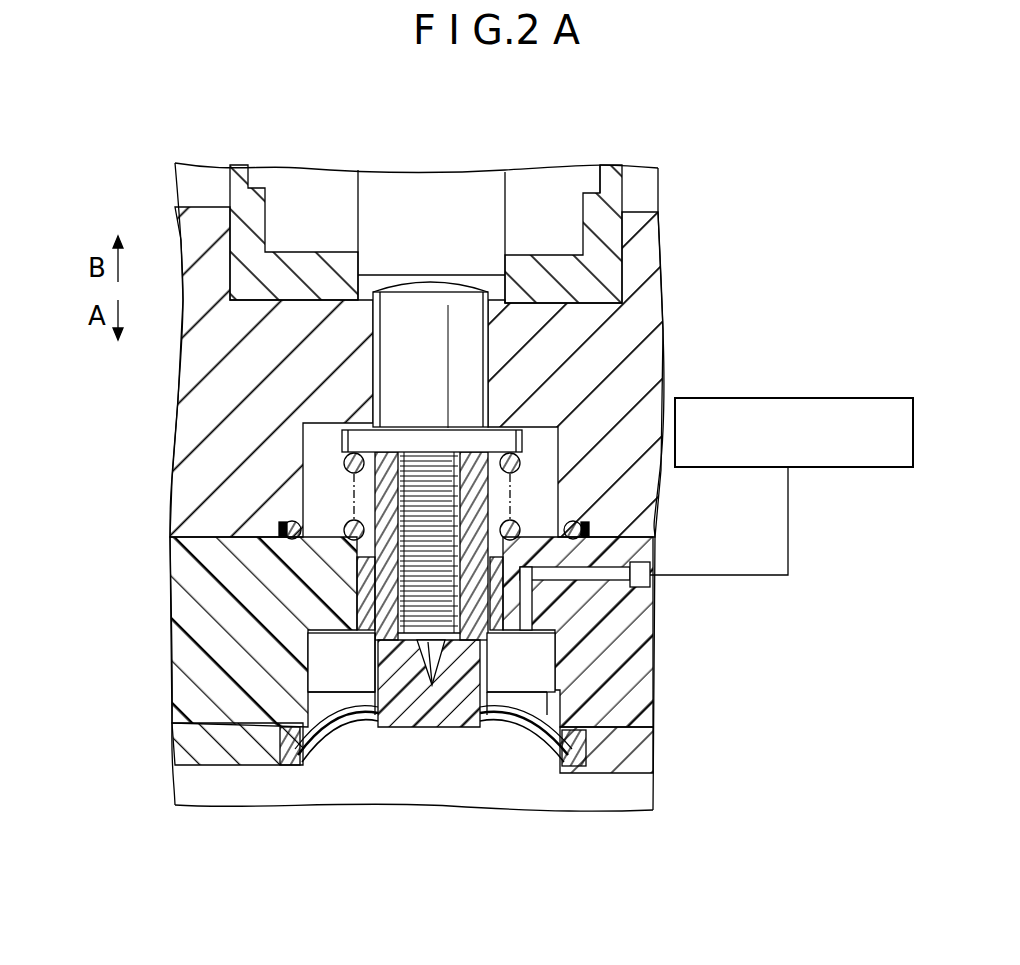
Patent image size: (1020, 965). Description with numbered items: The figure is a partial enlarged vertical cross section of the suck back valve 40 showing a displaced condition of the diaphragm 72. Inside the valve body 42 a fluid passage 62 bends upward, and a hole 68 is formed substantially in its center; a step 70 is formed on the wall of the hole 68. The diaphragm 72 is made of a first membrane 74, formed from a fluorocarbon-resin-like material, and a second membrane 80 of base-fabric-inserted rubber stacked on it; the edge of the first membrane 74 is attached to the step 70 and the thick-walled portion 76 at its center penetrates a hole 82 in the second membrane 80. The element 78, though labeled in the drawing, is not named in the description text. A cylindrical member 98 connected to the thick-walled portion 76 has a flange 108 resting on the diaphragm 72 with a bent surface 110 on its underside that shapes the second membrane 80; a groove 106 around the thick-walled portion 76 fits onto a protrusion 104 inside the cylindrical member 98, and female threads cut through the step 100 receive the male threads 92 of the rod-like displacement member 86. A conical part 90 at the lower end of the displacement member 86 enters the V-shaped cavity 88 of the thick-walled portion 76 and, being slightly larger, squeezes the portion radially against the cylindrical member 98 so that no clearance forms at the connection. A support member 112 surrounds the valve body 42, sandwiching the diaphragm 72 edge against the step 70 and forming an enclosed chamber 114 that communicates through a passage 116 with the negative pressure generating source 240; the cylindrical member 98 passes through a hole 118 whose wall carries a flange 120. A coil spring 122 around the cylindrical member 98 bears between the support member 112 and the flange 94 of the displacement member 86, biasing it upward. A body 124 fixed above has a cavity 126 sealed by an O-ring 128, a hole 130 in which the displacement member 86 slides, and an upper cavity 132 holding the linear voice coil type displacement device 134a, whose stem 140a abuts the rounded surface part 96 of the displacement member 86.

The suck back valve 40 is at (700, 180).
The valve body 42 is at (186, 748).
The fluid passage 62 is at (210, 790).
The hole 68 is at (322, 748).
The step 70 is at (288, 750).
The diaphragm 72 is at (528, 748).
The first membrane 74 is at (550, 750).
The thick-walled portion 76 is at (420, 740).
The valve seat 78 is at (355, 745).
The second membrane 80 is at (630, 745).
The hole 82 is at (600, 712).
The displacement member 86 is at (402, 352).
The cavity 88 is at (488, 748).
The conical part 90 is at (357, 560).
The male threads 92 is at (353, 503).
The flange 94 is at (340, 438).
The rounded surface part 96 is at (368, 302).
The cylindrical member 98 is at (282, 528).
The step 100 is at (307, 655).
The protrusion 104 is at (560, 660).
The groove 106 is at (598, 622).
The flange 108 is at (307, 688).
The bent surface 110 is at (272, 724).
The support member 112 is at (640, 612).
The enclosed chamber 114 is at (580, 688).
The passage 116 is at (640, 575).
The hole 118 is at (215, 560).
The flange 120 is at (235, 590).
The coil spring 122 is at (343, 463).
The body 124 is at (650, 300).
The cavity 126 is at (552, 440).
The O-ring 128 is at (585, 527).
The hole 130 is at (492, 362).
The cavity 132 is at (625, 253).
The linear voice coil type displacement device 134a is at (630, 188).
The stem 140a is at (440, 190).
The negative pressure generating source 240 is at (800, 398).